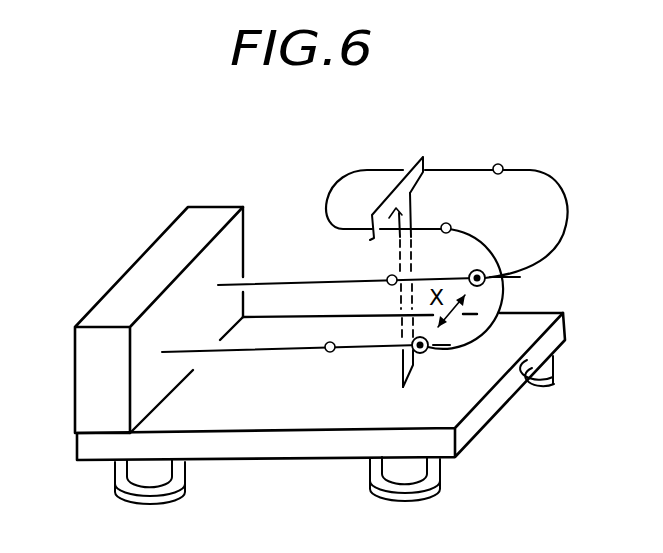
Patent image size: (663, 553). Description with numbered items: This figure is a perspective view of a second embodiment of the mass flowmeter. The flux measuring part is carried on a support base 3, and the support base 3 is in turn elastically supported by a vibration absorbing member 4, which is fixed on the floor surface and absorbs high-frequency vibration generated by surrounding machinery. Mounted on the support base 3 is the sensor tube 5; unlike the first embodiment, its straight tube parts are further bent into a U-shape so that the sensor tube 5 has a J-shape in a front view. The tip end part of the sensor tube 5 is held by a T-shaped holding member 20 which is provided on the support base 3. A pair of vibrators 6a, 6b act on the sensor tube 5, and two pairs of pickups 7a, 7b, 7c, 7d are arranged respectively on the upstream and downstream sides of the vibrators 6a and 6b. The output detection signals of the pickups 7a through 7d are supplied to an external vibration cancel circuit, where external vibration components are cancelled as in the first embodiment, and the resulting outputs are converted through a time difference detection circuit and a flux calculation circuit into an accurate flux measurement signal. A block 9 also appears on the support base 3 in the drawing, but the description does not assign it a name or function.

The support base 3 is at (275, 447).
The vibration absorbing member 4 is at (162, 480).
The sensor tube 5 is at (339, 178).
The vibrator 6a is at (428, 356).
The vibrator 6b is at (485, 282).
The pickup 7a is at (326, 351).
The pickup 7b is at (451, 227).
The pickup 7c is at (503, 166).
The pickup 7d is at (387, 276).
The block 9 is at (120, 292).
The T-shaped holding member 20 is at (421, 157).